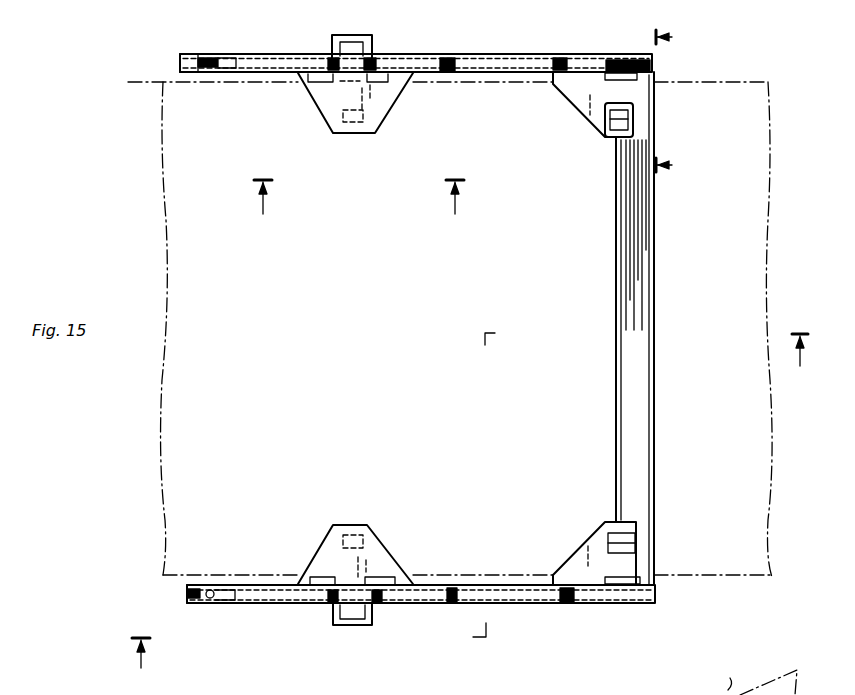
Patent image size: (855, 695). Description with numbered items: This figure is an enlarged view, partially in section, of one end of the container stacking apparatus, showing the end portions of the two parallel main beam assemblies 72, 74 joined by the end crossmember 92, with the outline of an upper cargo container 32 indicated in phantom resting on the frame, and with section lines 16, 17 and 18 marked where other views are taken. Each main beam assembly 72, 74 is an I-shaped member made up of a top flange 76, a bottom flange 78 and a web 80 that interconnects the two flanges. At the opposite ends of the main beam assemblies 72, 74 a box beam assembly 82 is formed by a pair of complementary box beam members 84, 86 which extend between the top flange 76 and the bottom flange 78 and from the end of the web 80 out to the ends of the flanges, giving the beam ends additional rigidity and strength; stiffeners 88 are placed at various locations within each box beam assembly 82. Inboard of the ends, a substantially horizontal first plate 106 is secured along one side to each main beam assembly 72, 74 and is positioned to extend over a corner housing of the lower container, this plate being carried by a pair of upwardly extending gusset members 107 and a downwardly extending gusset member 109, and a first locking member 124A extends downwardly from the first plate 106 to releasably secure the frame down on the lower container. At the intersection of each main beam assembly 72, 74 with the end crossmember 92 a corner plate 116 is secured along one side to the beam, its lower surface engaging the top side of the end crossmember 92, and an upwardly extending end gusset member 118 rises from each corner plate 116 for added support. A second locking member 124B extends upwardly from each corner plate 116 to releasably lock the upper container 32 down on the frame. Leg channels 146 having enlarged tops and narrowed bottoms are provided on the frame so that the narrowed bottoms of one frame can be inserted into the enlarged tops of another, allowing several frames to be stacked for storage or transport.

The well car floor 16 is at (468, 514).
The section line 17- 17 is at (372, 408).
The section line 18- 18 is at (674, 104).
The upper cargo container 32 is at (768, 578).
The main beam assembly 72 is at (447, 54).
The main beam assembly 74 is at (423, 604).
The top flange 76 is at (297, 603).
The bottom flange 78 is at (180, 70).
The web 80 is at (182, 52).
The box beam assembly 82 is at (203, 55).
The box beam member 84 is at (236, 73).
The box beam member 86 is at (262, 62).
The stiffener 88 is at (244, 66).
The end crossmember 92 is at (636, 422).
The first plate 106 is at (352, 134).
The upwardly extending gusset member 107 is at (320, 78).
The downwardly extending gusset member 109 is at (350, 331).
The corner plate 116 is at (578, 104).
The end gusset member 118 is at (628, 577).
The first locking member 124A is at (343, 125).
The second locking member 124B is at (632, 126).
The leg channel 146 is at (358, 35).